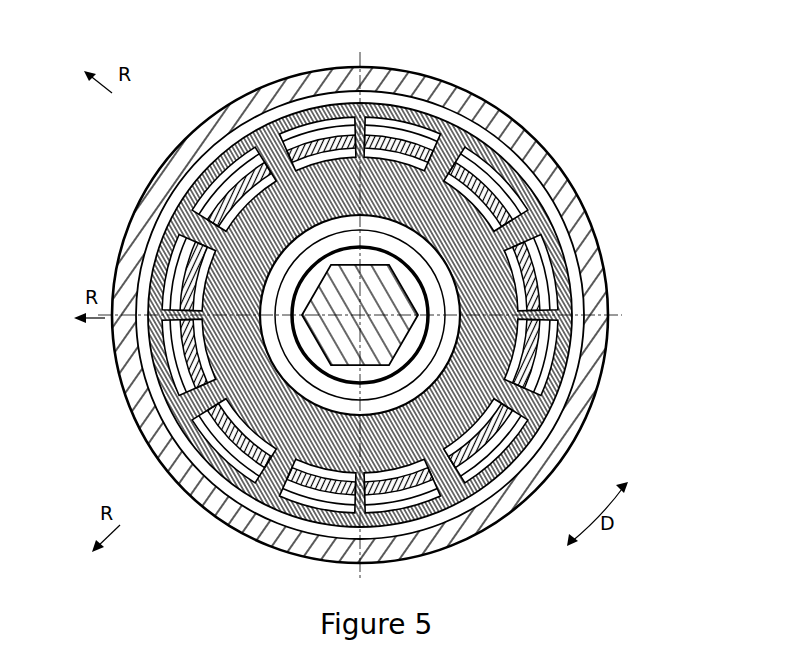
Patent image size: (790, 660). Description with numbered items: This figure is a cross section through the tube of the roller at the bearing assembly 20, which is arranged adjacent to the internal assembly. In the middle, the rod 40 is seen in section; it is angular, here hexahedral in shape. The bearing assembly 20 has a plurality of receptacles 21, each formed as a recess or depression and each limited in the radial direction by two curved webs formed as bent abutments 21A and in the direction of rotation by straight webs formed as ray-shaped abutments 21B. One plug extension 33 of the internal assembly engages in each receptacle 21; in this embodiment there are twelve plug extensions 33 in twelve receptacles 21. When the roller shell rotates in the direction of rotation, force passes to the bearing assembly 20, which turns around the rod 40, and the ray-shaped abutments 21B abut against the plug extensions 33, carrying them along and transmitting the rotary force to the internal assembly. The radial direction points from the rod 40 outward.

The bearing assembly 20 is at (248, 103).
The receptacle 21 is at (497, 190).
The bent abutment 21A is at (463, 148).
The ray-shaped abutment 21B is at (455, 158).
The plug extension 33 is at (277, 142).
The rod 40 is at (335, 342).